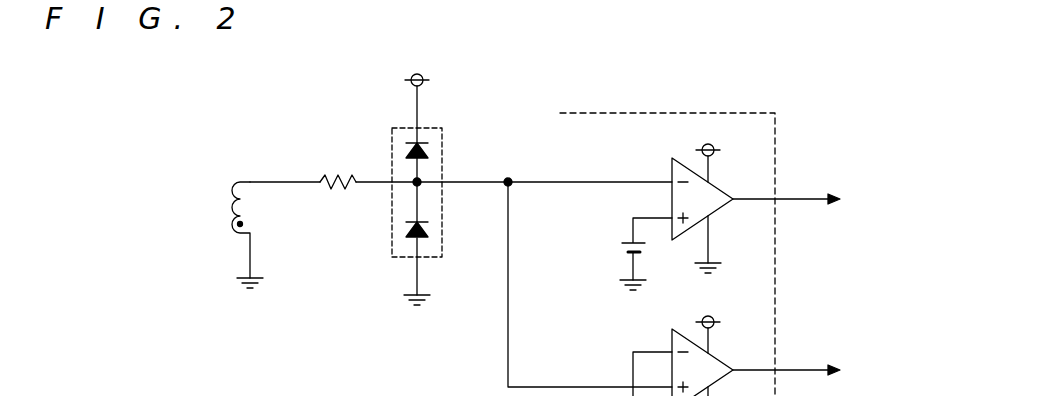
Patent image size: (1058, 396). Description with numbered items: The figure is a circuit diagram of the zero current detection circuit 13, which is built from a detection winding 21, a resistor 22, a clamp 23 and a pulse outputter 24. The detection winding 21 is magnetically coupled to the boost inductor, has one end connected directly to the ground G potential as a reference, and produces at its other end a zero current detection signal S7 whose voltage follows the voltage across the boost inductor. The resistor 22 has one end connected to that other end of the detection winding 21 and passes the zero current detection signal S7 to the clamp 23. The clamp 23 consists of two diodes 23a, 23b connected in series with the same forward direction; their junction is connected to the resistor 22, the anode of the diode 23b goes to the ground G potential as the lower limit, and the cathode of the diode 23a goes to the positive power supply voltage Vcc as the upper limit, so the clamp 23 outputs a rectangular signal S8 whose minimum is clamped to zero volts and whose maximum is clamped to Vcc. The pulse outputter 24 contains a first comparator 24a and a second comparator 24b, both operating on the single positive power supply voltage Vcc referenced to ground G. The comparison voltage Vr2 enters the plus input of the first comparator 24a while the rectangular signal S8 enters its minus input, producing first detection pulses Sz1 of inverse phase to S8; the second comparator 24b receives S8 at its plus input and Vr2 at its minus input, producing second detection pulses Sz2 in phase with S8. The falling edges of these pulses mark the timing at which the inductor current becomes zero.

The zero current detection circuit 13 is at (536, 67).
The detection winding 21 is at (233, 180).
The resistor 22 is at (333, 176).
The clamp 23 is at (442, 128).
The diode 23a is at (428, 150).
The diode 23b is at (428, 232).
The pulse outputter 24 is at (708, 113).
The first comparator 24a is at (672, 173).
The second comparator 24b is at (672, 345).
The zero current detection signal S7 is at (280, 176).
The rectangular signal S8 is at (530, 175).
The first detection pulses Sz1 is at (786, 187).
The second detection pulses Sz2 is at (786, 356).
The comparison voltage Vr2 is at (627, 254).
The positive power supply voltage Vcc is at (598, 203).
The ground G is at (252, 273).